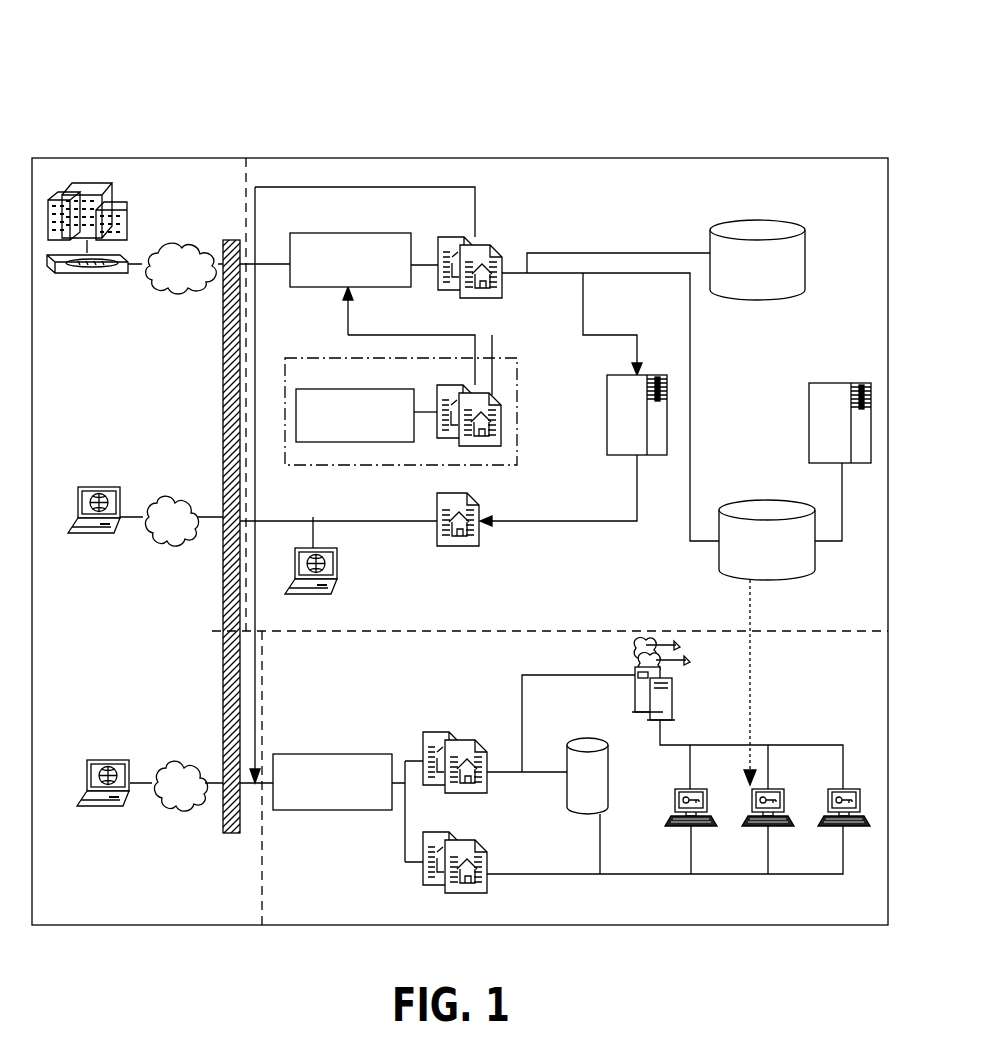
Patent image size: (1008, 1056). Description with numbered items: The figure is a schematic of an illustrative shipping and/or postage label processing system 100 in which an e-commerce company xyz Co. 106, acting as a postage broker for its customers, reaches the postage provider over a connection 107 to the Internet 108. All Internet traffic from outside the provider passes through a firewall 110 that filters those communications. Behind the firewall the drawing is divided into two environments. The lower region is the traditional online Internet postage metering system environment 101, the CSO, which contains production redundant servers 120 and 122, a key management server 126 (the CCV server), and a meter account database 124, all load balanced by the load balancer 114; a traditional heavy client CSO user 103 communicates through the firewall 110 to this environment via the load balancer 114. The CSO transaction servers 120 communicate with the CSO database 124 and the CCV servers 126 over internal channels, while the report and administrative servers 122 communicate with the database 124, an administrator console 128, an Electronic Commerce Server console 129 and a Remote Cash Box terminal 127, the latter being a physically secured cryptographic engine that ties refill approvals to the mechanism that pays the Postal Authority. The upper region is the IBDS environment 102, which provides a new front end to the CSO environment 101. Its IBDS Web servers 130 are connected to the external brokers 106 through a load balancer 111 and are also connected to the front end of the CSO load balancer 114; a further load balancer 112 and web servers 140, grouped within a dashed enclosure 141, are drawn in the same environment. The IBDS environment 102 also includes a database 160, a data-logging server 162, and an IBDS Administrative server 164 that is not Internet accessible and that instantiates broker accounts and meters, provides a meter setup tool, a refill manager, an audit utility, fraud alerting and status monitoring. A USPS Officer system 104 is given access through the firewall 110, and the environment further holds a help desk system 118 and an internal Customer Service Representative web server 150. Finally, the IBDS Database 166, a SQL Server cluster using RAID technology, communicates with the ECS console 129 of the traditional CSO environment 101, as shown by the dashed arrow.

The shipping and/or postage label processing system 100 is at (660, 94).
The online Internet postage metering system environment 101 is at (865, 684).
The IBDS environment 102 is at (858, 199).
The heavy client CSO user 103 is at (105, 760).
The USPS Officer system 104 is at (97, 487).
The e-commerce company 106 is at (105, 187).
The connection 107 is at (100, 274).
The Internet 108 is at (150, 284).
The firewall 110 is at (227, 396).
The load balancer 111 is at (352, 233).
The load balancer 112 is at (377, 442).
The load balancer 114 is at (358, 754).
The help desk system 118 is at (334, 548).
The production redundant servers 120 is at (467, 735).
The report and administrative servers 122 is at (485, 852).
The meter account database 124 is at (592, 740).
The key management server 126 is at (675, 695).
The Remote Cash Box terminal 127 is at (828, 797).
The administrator console 128 is at (675, 802).
The Electronic Commerce Server console 129 is at (752, 797).
The IBDS Web servers 130 is at (487, 245).
The web server 140 is at (500, 422).
The server group 141 is at (337, 357).
The Customer Service Representative web server 150 is at (470, 493).
The database 160 is at (805, 278).
The data-logging server 162 is at (607, 412).
The IBDS Administrative server 164 is at (839, 383).
The IBDS Database 166 is at (778, 500).